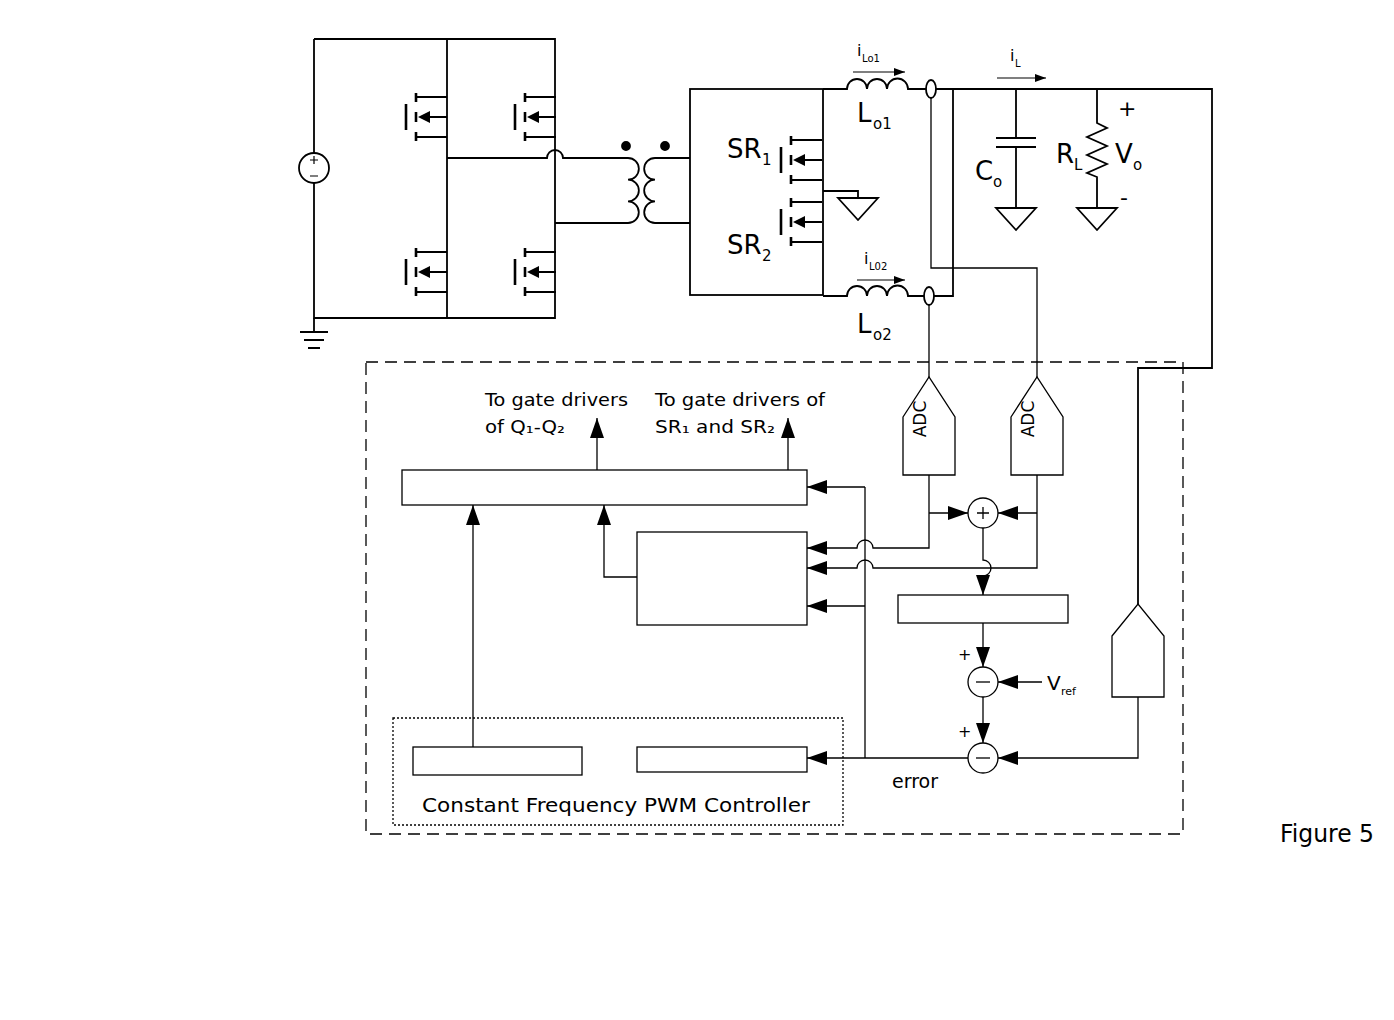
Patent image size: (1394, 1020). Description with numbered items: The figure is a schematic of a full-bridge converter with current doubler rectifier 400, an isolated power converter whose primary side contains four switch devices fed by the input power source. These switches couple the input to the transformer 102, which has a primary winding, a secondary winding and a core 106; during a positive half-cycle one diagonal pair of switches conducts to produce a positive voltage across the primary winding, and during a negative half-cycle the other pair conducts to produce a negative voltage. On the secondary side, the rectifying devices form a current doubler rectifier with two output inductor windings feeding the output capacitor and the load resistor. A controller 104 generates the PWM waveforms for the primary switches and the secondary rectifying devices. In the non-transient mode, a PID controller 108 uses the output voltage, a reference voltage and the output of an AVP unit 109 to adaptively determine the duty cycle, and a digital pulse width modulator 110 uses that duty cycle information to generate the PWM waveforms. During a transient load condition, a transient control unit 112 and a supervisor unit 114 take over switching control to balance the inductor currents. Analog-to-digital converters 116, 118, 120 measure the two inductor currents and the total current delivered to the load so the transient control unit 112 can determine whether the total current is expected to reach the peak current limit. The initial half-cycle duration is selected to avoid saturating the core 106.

The full-bridge converter with current doubler rectifier 400 is at (127, 72).
The transformer 102 is at (641, 128).
The core 106 is at (647, 216).
The controller 104 is at (774, 598).
The supervisor unit 114 is at (604, 487).
The transient control unit 112 is at (722, 578).
The analog-to-digital converter 118 is at (929, 426).
The analog-to-digital converter 116 is at (1037, 426).
The analog-to-digital converter 120 is at (1138, 650).
The AVP unit 109 is at (983, 609).
The PID controller 108 is at (722, 759).
The digital pulse width modulator 110 is at (497, 761).